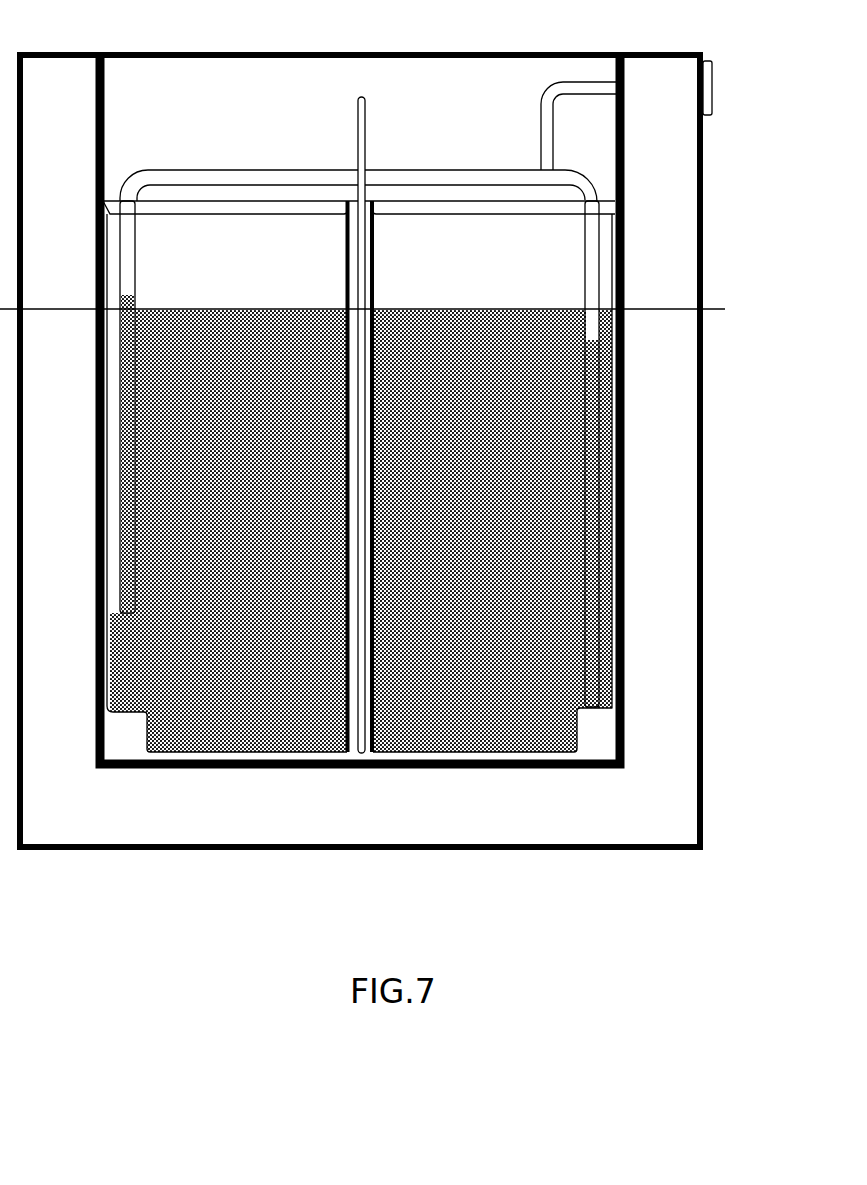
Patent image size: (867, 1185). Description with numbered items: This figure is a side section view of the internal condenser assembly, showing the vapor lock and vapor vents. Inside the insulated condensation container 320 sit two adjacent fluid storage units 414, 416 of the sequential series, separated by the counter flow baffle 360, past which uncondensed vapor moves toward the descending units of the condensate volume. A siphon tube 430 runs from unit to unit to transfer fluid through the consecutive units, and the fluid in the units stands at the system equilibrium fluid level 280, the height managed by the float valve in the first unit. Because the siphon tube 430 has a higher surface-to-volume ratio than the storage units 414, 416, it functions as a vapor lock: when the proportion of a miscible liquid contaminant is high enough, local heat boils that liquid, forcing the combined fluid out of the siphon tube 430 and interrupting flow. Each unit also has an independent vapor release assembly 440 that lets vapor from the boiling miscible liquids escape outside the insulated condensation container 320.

The system equilibrium fluid level 280 is at (387, 309).
The insulated condensation container 320 is at (690, 520).
The counter flow baffle 360 is at (362, 97).
The fluid storage unit 414 is at (425, 235).
The fluid storage unit 416 is at (175, 248).
The siphon tube 430 is at (290, 170).
The vapor release assembly 440 is at (578, 85).